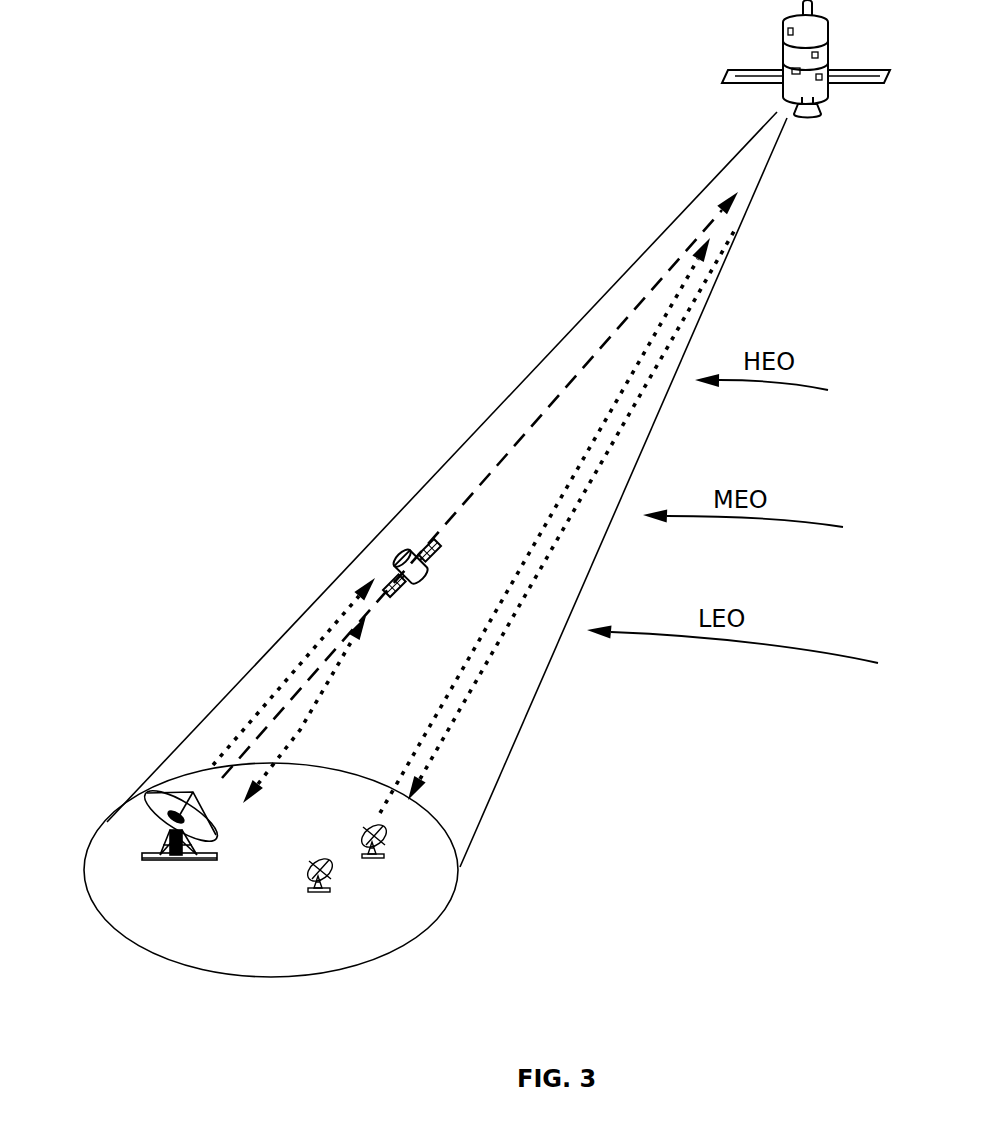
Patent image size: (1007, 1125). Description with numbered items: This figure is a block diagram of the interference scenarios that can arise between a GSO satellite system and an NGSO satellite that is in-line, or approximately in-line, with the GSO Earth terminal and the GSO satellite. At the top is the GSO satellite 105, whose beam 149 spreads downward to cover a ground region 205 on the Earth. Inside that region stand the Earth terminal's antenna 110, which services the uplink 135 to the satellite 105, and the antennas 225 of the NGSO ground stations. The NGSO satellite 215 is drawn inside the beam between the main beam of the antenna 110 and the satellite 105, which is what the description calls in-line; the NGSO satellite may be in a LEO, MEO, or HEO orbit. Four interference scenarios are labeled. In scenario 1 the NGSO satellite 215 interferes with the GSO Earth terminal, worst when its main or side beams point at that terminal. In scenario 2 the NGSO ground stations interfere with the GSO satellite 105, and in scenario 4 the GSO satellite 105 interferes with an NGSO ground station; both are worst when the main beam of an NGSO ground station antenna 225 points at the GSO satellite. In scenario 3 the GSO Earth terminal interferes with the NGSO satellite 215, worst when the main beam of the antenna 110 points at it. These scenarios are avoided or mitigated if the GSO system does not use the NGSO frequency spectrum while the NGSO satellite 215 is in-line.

The satellite 105 is at (805, 58).
The satellite beam coverage cone 149 is at (523, 378).
The uplink 135 is at (487, 482).
The NGSO satellite 215 is at (424, 566).
The antennas of the NGSO ground stations 225 is at (346, 861).
The Earth terminal's antenna 110 is at (162, 821).
The beam coverage area 205 is at (285, 955).
The interference scenario 1 is at (355, 670).
The interference scenario 2 is at (473, 652).
The interference scenario 3 is at (287, 682).
The interference scenario 4 is at (482, 670).